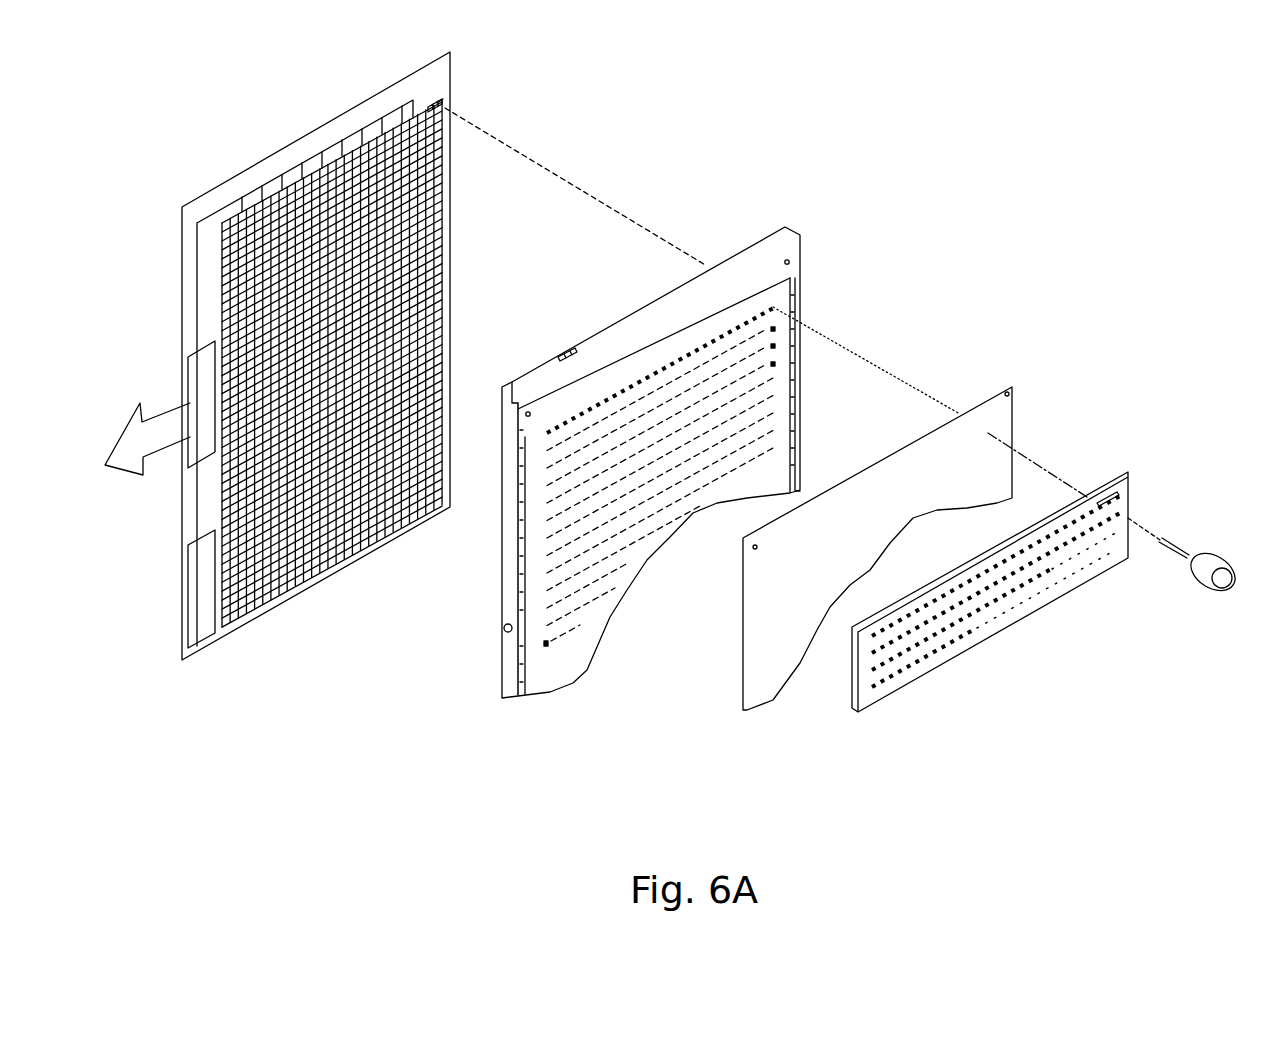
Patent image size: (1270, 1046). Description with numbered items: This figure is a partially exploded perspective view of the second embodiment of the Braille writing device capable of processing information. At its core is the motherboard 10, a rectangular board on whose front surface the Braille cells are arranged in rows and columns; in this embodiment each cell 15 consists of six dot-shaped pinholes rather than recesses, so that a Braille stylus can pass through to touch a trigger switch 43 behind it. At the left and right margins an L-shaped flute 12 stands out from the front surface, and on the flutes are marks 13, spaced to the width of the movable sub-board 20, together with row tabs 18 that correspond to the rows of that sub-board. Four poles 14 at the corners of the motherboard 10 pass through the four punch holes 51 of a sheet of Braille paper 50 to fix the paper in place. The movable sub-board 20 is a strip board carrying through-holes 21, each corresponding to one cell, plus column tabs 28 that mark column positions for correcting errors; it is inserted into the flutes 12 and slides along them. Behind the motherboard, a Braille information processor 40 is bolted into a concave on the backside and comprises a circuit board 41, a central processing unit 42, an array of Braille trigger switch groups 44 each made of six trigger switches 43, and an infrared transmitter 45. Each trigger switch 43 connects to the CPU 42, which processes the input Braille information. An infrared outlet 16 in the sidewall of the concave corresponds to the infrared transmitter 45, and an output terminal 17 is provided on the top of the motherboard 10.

The motherboard 10 is at (658, 284).
The flute 12 is at (519, 432).
The marks 13 is at (521, 517).
The poles 14 is at (528, 412).
The cell 15 is at (772, 306).
The infrared outlet 16 is at (505, 629).
The output terminal 17 is at (571, 350).
The row tabs 18 is at (522, 464).
The movable sub-board 20 is at (1027, 632).
The through-holes 21 is at (1087, 505).
The column tabs 28 is at (1107, 480).
The Braille information processor 40 is at (352, 568).
The circuit board 41 is at (207, 190).
The central processing unit 42 is at (188, 362).
The trigger switch 43 is at (446, 107).
The Braille trigger switch group 44 is at (437, 101).
The infrared transmitter 45 is at (193, 592).
The Braille paper 50 is at (740, 643).
The punch holes 51 is at (1012, 393).